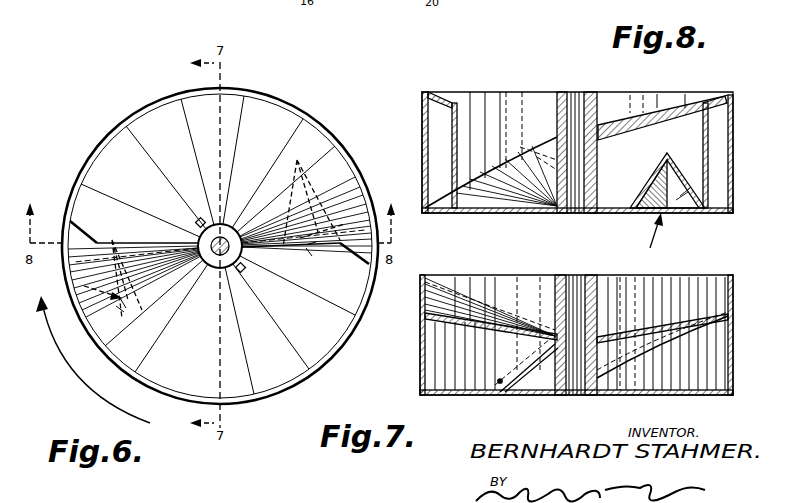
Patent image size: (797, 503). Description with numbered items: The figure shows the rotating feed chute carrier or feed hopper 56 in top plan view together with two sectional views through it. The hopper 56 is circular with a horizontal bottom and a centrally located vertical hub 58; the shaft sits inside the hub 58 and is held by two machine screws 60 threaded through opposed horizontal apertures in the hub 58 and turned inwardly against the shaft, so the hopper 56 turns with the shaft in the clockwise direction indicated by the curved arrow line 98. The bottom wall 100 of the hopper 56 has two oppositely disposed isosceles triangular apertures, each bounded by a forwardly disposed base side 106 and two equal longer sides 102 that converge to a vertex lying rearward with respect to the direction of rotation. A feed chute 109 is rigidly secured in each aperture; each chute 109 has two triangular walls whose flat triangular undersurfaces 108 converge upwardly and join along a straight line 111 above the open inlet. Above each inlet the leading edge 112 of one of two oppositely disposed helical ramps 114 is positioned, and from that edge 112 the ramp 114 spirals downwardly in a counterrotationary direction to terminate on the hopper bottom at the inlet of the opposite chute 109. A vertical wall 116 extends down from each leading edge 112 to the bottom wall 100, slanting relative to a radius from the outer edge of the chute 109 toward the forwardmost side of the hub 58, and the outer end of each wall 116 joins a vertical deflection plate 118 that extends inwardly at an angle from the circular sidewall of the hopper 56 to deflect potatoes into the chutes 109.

In FIG. 6, the feed hopper 56 is at (284, 95).
In FIG. 6, the hub 58 is at (231, 268).
In FIG. 8, the hub 58 is at (577, 124).
In FIG. 7, the hub 58 is at (598, 296).
In FIG. 6, the machine screws 60 is at (201, 218).
In FIG. 6, the curved arrow line 98 is at (78, 373).
In FIG. 8, the bottom wall 100 is at (500, 213).
In FIG. 7, the bottom wall 100 is at (503, 395).
In FIG. 6, the longer sides 102 is at (363, 174).
In FIG. 8, the longer sides 102 is at (672, 214).
In FIG. 6, the base sides 106 is at (293, 200).
In FIG. 8, the triangular undersurfaces 108 is at (686, 206).
In FIG. 7, the triangular undersurfaces 108 is at (541, 382).
In FIG. 6, the feed chutes 109 is at (368, 193).
In FIG. 8, the feed chutes 109 is at (647, 237).
In FIG. 7, the feed chutes 109 is at (493, 384).
In FIG. 6, the straight line 111 is at (225, 277).
In FIG. 6, the leading edge 112 is at (282, 360).
In FIG. 7, the leading edge 112 is at (611, 346).
In FIG. 6, the helical ramps 114 is at (170, 138).
In FIG. 8, the helical ramps 114 is at (515, 164).
In FIG. 7, the helical ramps 114 is at (484, 305).
In FIG. 6, the vertical walls 116 is at (138, 240).
In FIG. 6, the deflection plates 118 is at (84, 229).